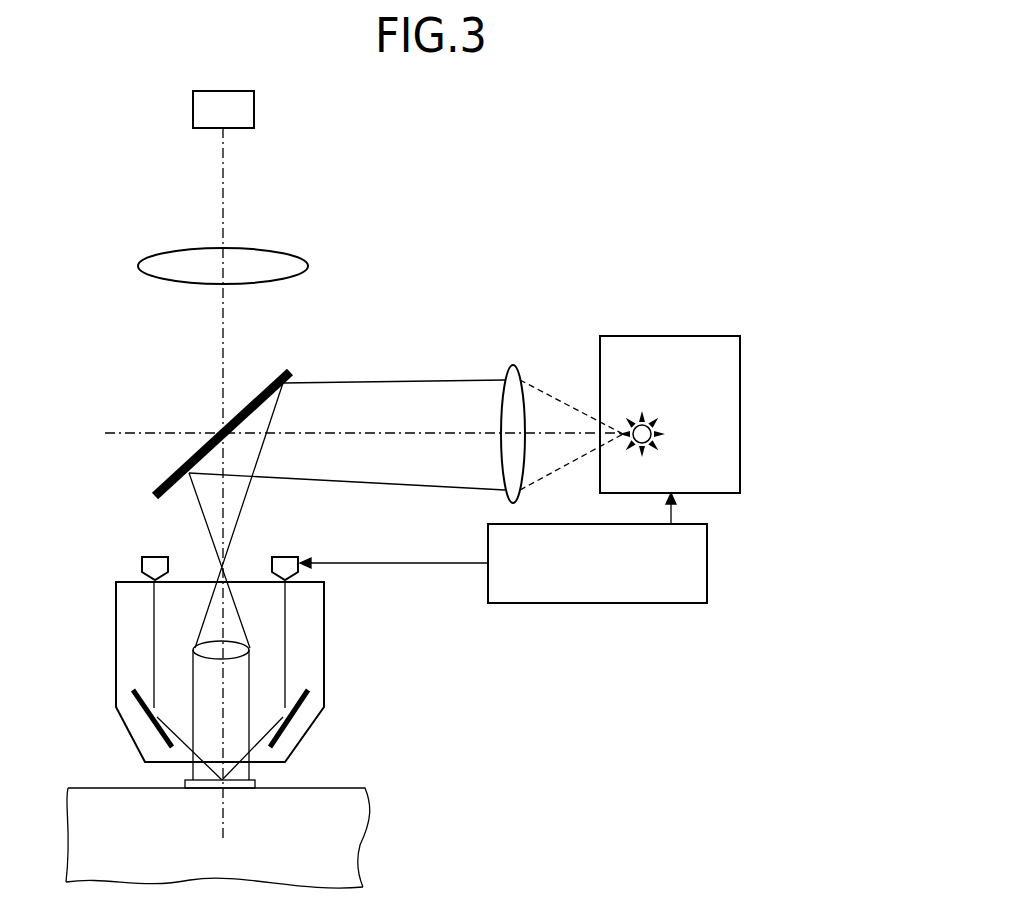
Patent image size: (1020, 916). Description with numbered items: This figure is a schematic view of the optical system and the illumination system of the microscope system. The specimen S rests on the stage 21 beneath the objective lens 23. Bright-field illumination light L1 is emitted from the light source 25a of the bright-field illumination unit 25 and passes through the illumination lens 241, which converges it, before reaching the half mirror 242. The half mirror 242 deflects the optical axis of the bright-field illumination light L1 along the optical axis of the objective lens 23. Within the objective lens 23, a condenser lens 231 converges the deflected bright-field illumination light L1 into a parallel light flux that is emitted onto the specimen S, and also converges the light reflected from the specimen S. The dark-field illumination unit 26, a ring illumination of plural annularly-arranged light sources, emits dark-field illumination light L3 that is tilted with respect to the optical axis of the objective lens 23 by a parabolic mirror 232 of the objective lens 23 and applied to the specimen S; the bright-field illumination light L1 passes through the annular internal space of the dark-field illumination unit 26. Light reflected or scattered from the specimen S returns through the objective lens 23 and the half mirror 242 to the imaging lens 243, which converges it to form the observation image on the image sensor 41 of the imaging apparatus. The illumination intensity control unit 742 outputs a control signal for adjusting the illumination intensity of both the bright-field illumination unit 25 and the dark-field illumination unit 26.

The image sensor 41 is at (254, 108).
The imaging lens 243 is at (308, 266).
The half mirror 242 is at (285, 368).
The illumination lens 241 is at (513, 365).
The bright-field illumination unit 25 is at (740, 450).
The light source 25a is at (660, 424).
The illumination intensity control unit 742 is at (621, 604).
The dark-field illumination unit 26 is at (150, 556).
The objective lens 23 is at (324, 615).
The condenser lens 231 is at (192, 650).
The parabolic mirror 232 is at (137, 690).
The bright-field illumination light L1 is at (410, 380).
The dark-field illumination light L3 is at (285, 648).
The specimen S is at (258, 785).
The stage 21 is at (343, 830).